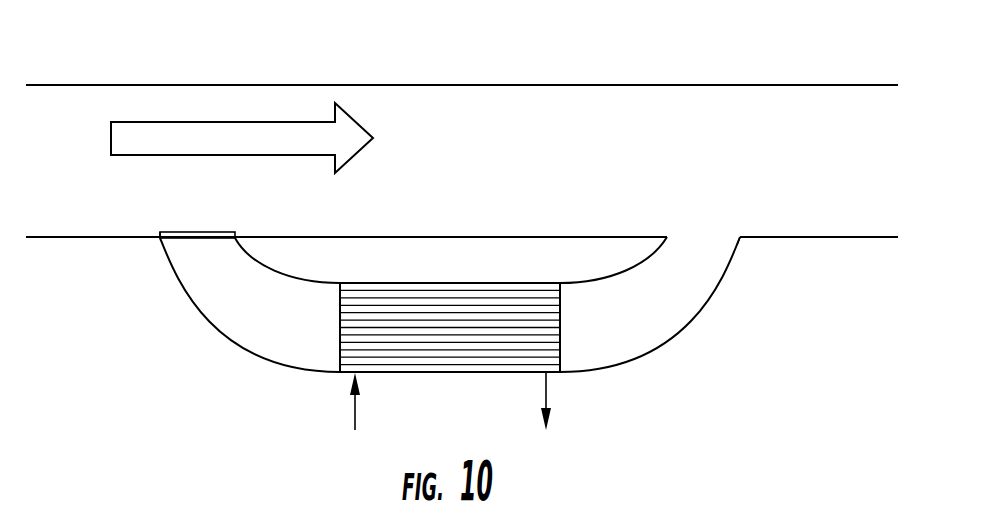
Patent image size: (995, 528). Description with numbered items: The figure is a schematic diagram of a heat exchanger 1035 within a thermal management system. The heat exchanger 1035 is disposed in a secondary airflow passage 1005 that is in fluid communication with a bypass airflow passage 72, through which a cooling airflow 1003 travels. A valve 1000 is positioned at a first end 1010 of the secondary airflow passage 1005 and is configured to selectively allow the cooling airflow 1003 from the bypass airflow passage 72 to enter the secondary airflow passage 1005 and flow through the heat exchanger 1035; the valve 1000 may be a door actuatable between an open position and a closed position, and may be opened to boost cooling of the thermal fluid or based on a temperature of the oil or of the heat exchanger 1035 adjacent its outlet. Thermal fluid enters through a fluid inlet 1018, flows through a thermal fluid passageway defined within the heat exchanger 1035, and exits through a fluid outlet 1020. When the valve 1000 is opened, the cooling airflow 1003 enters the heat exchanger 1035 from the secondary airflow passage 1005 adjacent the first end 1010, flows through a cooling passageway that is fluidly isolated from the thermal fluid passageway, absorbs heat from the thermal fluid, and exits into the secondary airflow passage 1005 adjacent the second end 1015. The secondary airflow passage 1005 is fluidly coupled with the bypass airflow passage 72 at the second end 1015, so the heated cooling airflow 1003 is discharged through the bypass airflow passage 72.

The bypass airflow passage 72 is at (630, 177).
The cooling airflow 1003 is at (233, 140).
The valve 1000 is at (197, 235).
The first end 1010 is at (170, 225).
The second end 1015 is at (717, 231).
The secondary airflow passage 1005 is at (303, 327).
The heat exchanger 1035 is at (460, 293).
The fluid inlet 1018 is at (355, 407).
The fluid outlet 1020 is at (546, 390).